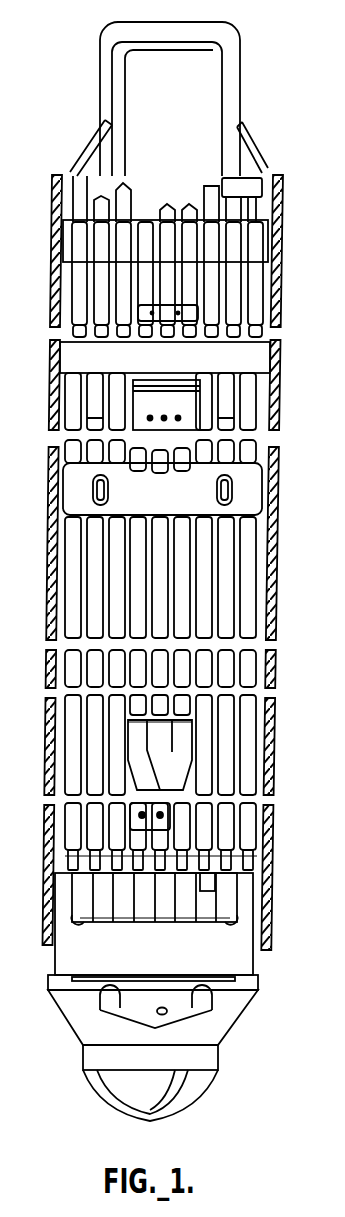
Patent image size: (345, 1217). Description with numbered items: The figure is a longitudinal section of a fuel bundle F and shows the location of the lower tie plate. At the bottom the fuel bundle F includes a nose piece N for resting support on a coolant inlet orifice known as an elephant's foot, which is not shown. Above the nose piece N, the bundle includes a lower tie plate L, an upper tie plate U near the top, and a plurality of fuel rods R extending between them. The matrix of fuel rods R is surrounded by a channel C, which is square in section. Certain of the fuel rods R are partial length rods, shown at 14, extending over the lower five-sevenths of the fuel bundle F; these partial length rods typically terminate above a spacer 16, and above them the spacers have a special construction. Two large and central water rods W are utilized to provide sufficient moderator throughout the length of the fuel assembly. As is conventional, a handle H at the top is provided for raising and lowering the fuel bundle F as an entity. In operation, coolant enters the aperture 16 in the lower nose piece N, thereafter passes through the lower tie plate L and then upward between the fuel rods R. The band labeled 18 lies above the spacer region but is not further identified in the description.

The handle H is at (243, 62).
The channel C is at (47, 576).
The upper tie plate U is at (286, 237).
The fuel bundle F is at (281, 601).
The fuel rods R is at (157, 590).
The upper spacer band 18 is at (272, 360).
The partial length fuel rods 14 is at (98, 420).
The aperture 16 is at (253, 490).
The water rods W is at (133, 753).
The lower tie plate L is at (257, 883).
The nose piece N is at (236, 1032).